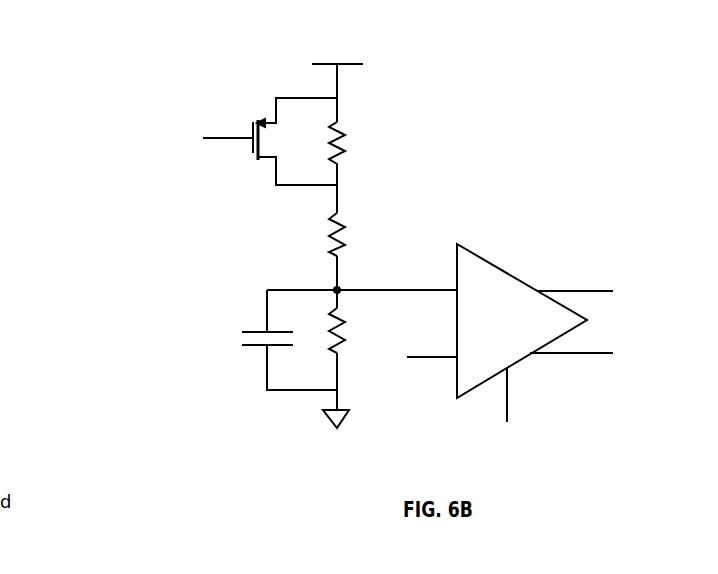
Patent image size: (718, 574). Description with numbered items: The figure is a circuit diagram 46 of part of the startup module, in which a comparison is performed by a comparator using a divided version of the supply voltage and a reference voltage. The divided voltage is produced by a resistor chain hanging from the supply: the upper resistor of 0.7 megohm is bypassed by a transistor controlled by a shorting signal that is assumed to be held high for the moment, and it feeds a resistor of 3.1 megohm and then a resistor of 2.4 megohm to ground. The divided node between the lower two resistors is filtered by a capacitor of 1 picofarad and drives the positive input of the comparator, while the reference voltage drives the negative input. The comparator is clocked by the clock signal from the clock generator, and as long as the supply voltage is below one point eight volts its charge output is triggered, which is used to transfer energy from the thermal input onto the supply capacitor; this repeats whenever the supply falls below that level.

The circuit diagram 46 is at (474, 69).
The 0.7 megohm resistor 0.7 is at (364, 144).
The 3.1 megohm resistor 3.1 is at (365, 232).
The 2.4 megohm resistor 2.4 is at (365, 330).
The 1 pF capacitor 1 is at (289, 340).